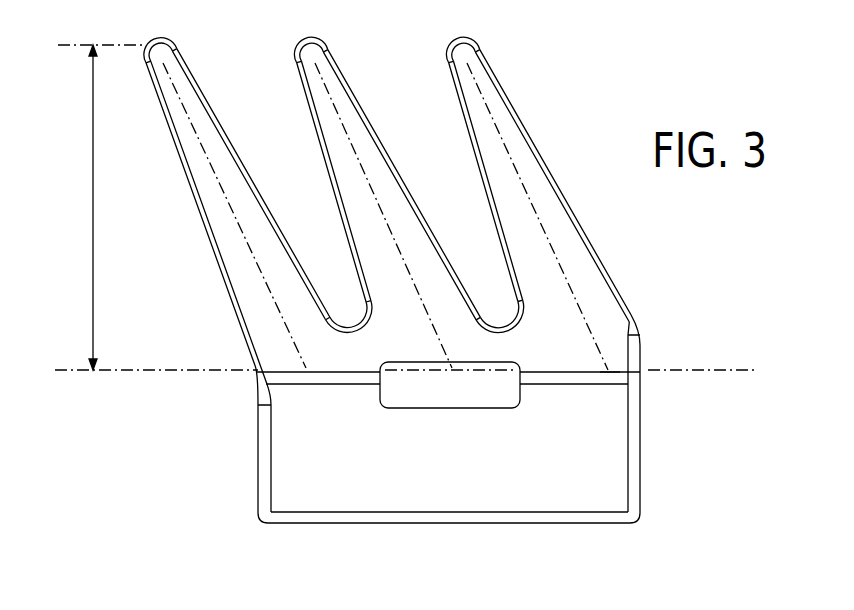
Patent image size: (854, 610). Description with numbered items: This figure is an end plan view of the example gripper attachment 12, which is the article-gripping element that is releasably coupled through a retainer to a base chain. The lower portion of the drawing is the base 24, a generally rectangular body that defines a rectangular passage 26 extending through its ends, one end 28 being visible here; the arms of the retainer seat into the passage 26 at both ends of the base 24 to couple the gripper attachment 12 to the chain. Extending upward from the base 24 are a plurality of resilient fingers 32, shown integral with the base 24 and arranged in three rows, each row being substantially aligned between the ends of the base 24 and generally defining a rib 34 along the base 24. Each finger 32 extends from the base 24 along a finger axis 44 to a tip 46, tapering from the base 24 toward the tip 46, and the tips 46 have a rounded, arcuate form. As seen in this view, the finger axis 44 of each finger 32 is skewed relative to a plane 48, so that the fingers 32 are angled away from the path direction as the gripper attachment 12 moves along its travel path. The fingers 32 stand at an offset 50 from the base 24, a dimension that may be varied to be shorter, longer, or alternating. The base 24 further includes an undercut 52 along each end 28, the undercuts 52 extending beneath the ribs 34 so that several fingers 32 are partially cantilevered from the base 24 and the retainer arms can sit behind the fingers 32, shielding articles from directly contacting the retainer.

The gripper attachment 12 is at (197, 427).
The base 24 is at (568, 523).
The rectangular passage 26 is at (463, 408).
The end 28 is at (445, 477).
The resilient finger 32 is at (162, 43).
The rib 34 is at (298, 334).
The finger axis 44 is at (201, 133).
The tip 46 is at (168, 43).
The plane 48 is at (693, 370).
The offset 50 is at (93, 207).
The undercut 52 is at (610, 372).